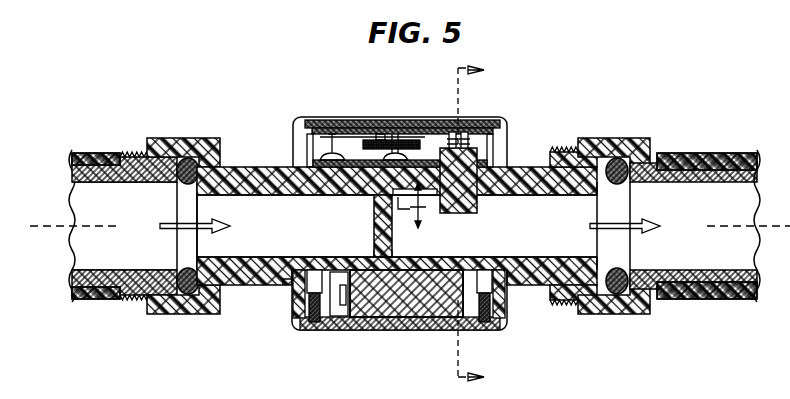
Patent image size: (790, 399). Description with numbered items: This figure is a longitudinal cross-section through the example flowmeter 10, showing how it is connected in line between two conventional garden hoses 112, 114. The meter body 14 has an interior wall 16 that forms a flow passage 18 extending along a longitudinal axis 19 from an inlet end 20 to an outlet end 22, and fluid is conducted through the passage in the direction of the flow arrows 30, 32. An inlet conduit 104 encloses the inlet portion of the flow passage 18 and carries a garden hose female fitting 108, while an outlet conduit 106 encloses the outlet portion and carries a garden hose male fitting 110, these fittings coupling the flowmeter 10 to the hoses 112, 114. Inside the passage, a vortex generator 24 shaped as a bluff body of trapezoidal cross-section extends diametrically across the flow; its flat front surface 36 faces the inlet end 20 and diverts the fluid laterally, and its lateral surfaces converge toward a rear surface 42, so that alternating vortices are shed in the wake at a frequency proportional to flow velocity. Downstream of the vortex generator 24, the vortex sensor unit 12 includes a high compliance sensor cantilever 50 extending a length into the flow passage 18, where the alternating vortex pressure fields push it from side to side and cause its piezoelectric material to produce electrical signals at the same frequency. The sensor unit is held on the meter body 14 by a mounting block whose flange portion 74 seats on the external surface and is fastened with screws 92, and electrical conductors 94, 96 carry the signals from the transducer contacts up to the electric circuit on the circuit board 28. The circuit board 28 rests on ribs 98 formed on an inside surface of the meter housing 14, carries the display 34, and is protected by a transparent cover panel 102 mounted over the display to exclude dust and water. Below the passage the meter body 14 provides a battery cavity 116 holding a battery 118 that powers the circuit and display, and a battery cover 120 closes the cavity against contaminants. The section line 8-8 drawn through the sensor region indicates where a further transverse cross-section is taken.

The section line 8- 8 is at (479, 225).
The flowmeter 10 is at (286, 74).
The vortex sensor unit 12 is at (490, 206).
The meter body 14 is at (292, 280).
The interior wall 16 is at (233, 257).
The flow passage 18 is at (279, 240).
The longitudinal axis 19 is at (40, 226).
The inlet end 20 is at (193, 236).
The outlet end 22 is at (600, 237).
The vortex generator 24 is at (363, 210).
The circuit board 28 is at (347, 136).
The flow arrow 30 is at (168, 224).
The flow arrow 32 is at (643, 214).
The display 34 is at (385, 122).
The flat front surface 36 is at (374, 254).
The rear surface 42 is at (393, 254).
The sensor cantilever 50 is at (463, 212).
The flange portion 74 is at (502, 165).
The screws 92 is at (298, 128).
The electrical conductor 94 is at (452, 132).
The electrical conductor 96 is at (465, 132).
The ribs 98 is at (307, 147).
The transparent cover panel 102 is at (313, 119).
The inlet conduit 104 is at (254, 172).
The outlet conduit 106 is at (538, 178).
The garden hose female fitting 108 is at (209, 138).
The garden hose male fitting 110 is at (577, 148).
The garden hose 112 is at (93, 155).
The garden hose 114 is at (710, 153).
The battery cavity 116 is at (354, 320).
The battery 118 is at (390, 320).
The battery cover 120 is at (456, 328).